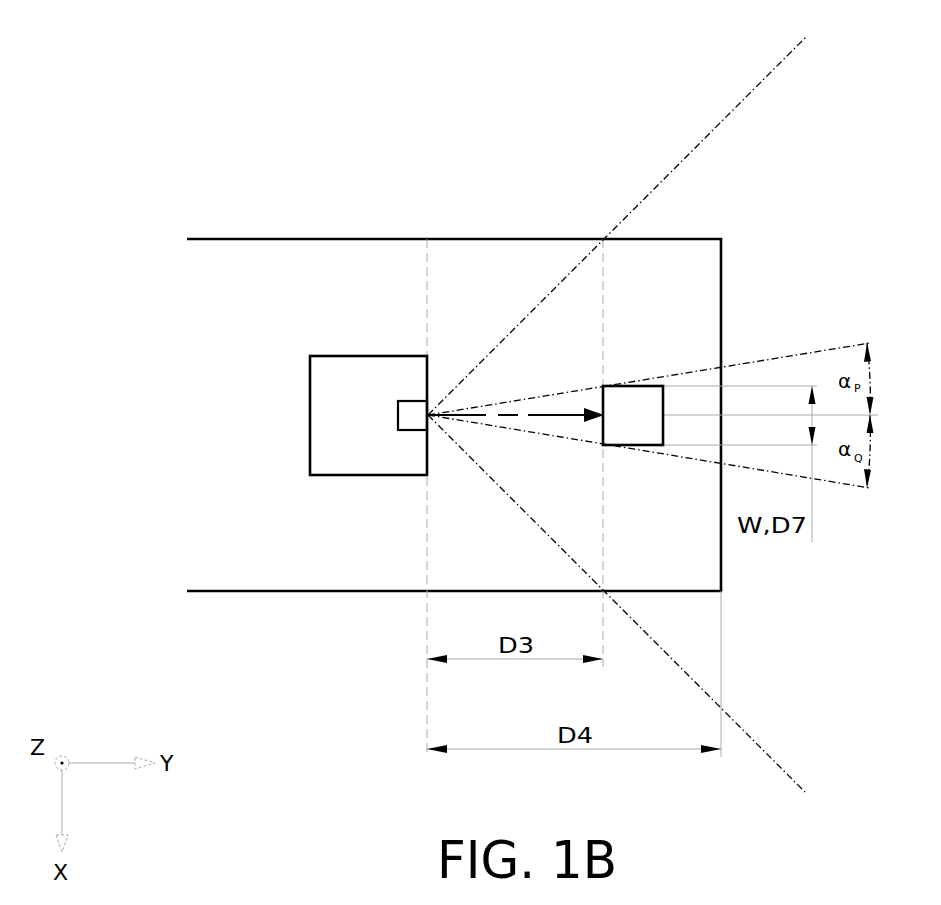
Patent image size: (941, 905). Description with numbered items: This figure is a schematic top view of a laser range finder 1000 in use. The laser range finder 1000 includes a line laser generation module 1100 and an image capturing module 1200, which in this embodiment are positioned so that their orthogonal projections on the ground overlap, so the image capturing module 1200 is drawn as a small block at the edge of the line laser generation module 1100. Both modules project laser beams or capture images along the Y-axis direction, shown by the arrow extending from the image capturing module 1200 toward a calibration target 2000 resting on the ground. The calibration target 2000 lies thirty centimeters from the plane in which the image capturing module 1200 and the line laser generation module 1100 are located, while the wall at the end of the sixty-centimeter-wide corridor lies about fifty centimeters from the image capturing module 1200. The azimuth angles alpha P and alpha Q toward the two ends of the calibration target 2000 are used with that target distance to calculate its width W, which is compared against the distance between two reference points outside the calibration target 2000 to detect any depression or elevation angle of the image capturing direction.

The laser range finder 1000 is at (322, 430).
The line laser generation module 1100 is at (323, 378).
The image capturing module 1200 is at (416, 410).
The calibration target 2000 is at (643, 402).